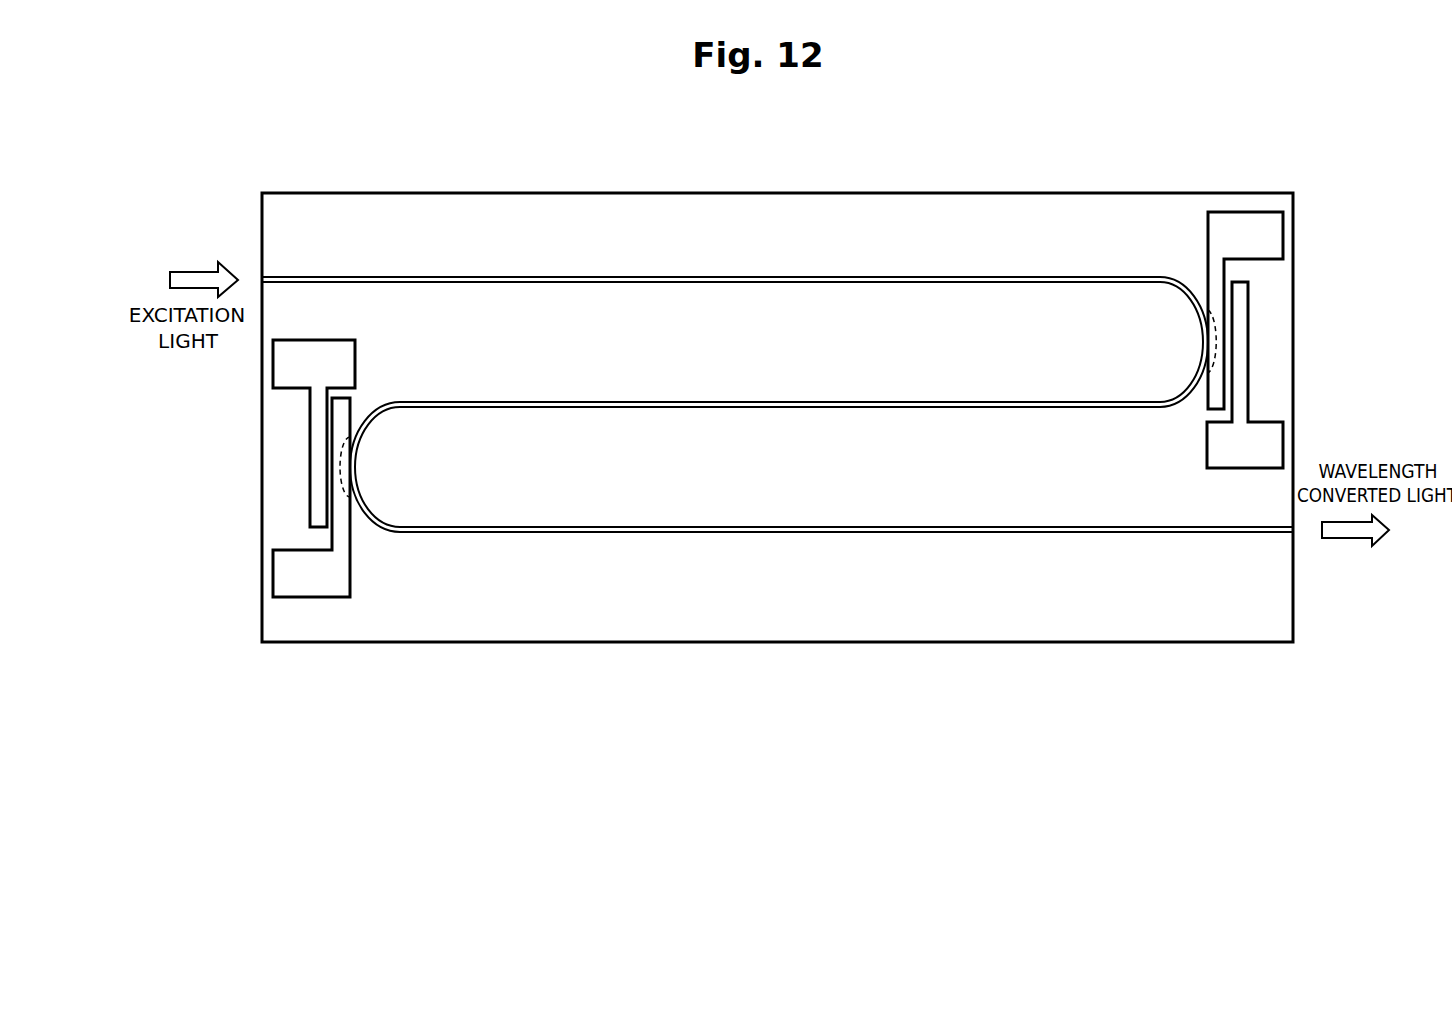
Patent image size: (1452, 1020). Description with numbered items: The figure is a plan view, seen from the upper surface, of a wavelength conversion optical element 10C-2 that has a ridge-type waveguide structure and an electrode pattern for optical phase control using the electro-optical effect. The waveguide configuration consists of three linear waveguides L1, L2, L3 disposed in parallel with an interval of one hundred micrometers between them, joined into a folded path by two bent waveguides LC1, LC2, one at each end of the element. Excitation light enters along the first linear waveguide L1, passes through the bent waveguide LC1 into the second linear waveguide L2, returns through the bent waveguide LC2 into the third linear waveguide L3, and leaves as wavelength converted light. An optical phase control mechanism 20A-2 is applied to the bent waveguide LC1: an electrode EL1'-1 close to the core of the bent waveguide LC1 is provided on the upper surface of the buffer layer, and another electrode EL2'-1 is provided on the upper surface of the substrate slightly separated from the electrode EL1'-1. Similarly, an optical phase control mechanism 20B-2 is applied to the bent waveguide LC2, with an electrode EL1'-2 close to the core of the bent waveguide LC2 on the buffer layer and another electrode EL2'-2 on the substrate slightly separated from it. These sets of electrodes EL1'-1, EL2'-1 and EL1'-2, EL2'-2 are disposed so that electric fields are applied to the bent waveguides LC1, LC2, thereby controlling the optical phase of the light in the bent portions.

The wavelength conversion optical element 10C-2 is at (778, 193).
The optical phase control mechanism 20A-2 is at (1181, 259).
The optical phase control mechanism 20B-2 is at (377, 572).
The linear waveguide L1 is at (688, 277).
The linear waveguide L2 is at (706, 402).
The linear waveguide L3 is at (692, 527).
The electrode EL1'-1 is at (1305, 309).
The electrode EL2'-1 is at (1306, 375).
The electrode EL1'-2 is at (244, 513).
The electrode EL2'-2 is at (231, 433).
The bent waveguide LC1 is at (1310, 275).
The bent waveguide LC2 is at (257, 395).